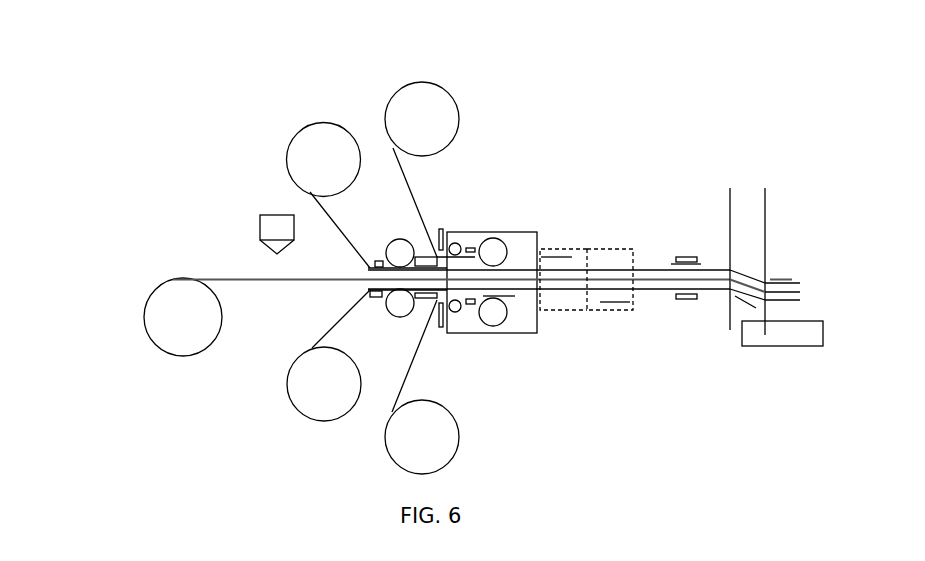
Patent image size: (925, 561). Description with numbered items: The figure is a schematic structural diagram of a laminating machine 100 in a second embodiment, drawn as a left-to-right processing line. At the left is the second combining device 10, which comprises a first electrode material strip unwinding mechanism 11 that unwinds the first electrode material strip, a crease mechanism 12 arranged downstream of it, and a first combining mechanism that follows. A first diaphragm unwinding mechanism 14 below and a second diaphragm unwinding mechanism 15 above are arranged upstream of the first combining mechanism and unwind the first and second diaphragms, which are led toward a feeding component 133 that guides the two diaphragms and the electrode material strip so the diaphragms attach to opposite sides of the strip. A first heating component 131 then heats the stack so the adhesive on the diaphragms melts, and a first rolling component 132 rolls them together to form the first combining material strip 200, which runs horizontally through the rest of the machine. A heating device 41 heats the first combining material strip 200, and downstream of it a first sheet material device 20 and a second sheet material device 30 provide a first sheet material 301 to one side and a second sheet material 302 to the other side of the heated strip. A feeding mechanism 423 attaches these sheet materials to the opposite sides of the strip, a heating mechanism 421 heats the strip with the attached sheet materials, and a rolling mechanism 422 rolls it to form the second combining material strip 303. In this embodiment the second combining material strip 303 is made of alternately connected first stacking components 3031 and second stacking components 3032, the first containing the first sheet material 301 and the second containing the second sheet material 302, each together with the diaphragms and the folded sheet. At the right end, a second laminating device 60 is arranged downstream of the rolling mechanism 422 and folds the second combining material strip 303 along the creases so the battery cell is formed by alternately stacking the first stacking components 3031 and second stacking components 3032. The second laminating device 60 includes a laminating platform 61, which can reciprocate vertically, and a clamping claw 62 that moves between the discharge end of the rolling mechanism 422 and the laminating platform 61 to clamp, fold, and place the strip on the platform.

The laminating machine 100 is at (62, 35).
The second combining device 10 is at (181, 172).
The first electrode material strip unwinding mechanism 11 is at (144, 319).
The crease mechanism 12 is at (260, 232).
The first diaphragm unwinding mechanism 14 is at (288, 391).
The second diaphragm unwinding mechanism 15 is at (287, 157).
The first sheet material device 20 is at (485, 404).
The second sheet material device 30 is at (489, 97).
The heating device 41 is at (418, 257).
The first heating component 131 is at (372, 298).
The first rolling component 132 is at (400, 317).
The feeding component 133 is at (373, 260).
The first combining material strip 200 is at (660, 290).
The first sheet material 301 is at (606, 303).
The second sheet material 302 is at (543, 256).
The second combining material strip 303 is at (590, 237).
The first stacking component 3031 is at (617, 249).
The second stacking component 3032 is at (548, 311).
The heating mechanism 421 is at (458, 312).
The rolling mechanism 422 is at (497, 238).
The feeding mechanism 423 is at (454, 243).
The second laminating device 60 is at (776, 244).
The laminating platform 61 is at (786, 347).
The clamping claw 62 is at (695, 300).